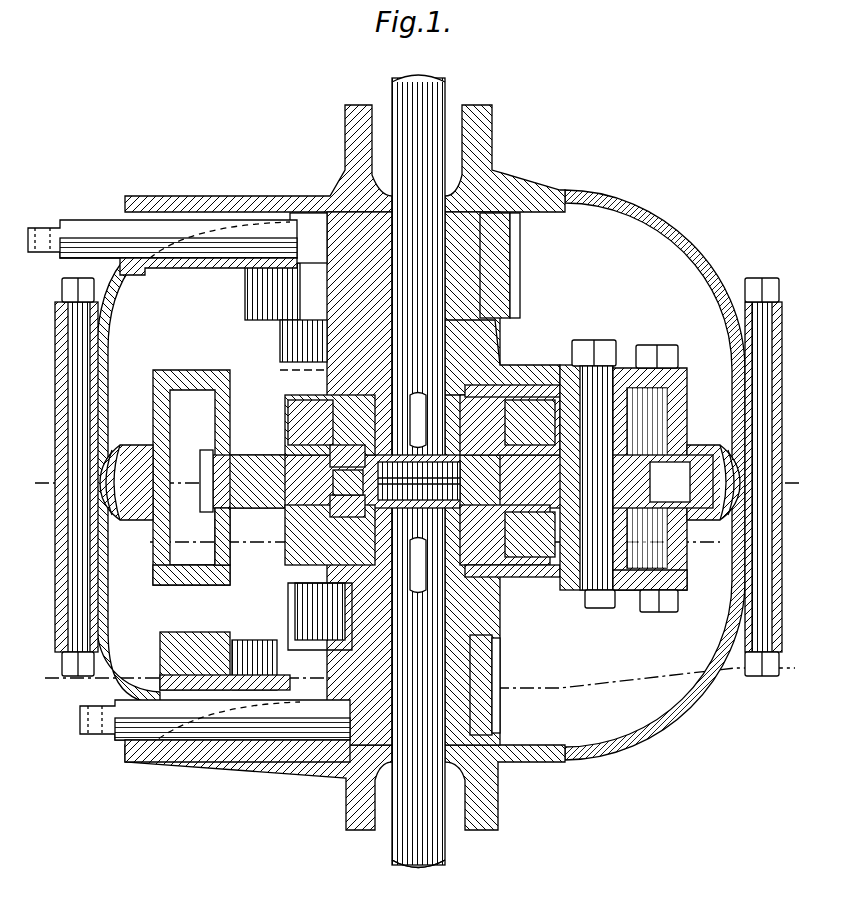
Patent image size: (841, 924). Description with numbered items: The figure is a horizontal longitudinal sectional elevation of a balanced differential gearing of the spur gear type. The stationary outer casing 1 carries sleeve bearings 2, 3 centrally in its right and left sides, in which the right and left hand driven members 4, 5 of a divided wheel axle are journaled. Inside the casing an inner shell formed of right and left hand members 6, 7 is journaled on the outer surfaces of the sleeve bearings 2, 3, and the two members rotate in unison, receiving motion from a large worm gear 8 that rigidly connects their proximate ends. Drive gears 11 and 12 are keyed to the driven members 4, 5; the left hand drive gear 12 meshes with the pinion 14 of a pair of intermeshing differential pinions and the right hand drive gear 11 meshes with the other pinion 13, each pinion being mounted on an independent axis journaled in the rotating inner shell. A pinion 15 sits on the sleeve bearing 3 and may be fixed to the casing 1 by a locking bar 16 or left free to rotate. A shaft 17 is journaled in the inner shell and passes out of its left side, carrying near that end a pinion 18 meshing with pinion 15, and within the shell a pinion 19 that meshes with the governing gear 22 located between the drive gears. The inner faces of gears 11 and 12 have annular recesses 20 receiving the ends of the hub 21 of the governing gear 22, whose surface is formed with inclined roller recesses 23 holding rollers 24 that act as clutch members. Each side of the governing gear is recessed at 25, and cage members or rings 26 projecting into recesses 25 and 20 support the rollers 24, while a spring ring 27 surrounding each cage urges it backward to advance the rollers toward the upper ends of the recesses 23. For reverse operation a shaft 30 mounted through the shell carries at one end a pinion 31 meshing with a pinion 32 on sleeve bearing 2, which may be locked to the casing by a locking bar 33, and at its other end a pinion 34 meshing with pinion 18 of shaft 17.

The stationary outer casing 1 is at (572, 196).
The sleeve bearing 2 is at (50, 483).
The sleeve bearing 3 is at (515, 715).
The right hand driven member 4 is at (445, 88).
The left hand driven member 5 is at (445, 855).
The right hand inner shell member 6 is at (160, 372).
The left hand inner shell member 7 is at (152, 582).
The worm gear 8 is at (125, 447).
The right hand drive gear 11 is at (530, 422).
The left hand drive gear 12 is at (530, 534).
The differential pinion 13 is at (607, 462).
The differential pinion 14 is at (622, 585).
The pinion 15 is at (492, 682).
The locking bar 16 is at (222, 740).
The shaft 17 is at (245, 532).
The pinion 18 is at (176, 642).
The pinion 19 is at (200, 460).
The annular recess 20 is at (417, 480).
The hub 21 is at (422, 480).
The governing gear 22 is at (463, 481).
The inclined roller recess 23 is at (372, 482).
The roller 24 is at (310, 479).
The annular recess 25 is at (434, 481).
The cage member 26 is at (446, 479).
The spring ring 27 is at (380, 499).
The shaft 30 is at (320, 616).
The pinion 31 is at (255, 292).
The pinion 32 is at (518, 295).
The locking bar 33 is at (92, 228).
The pinion 34 is at (215, 722).